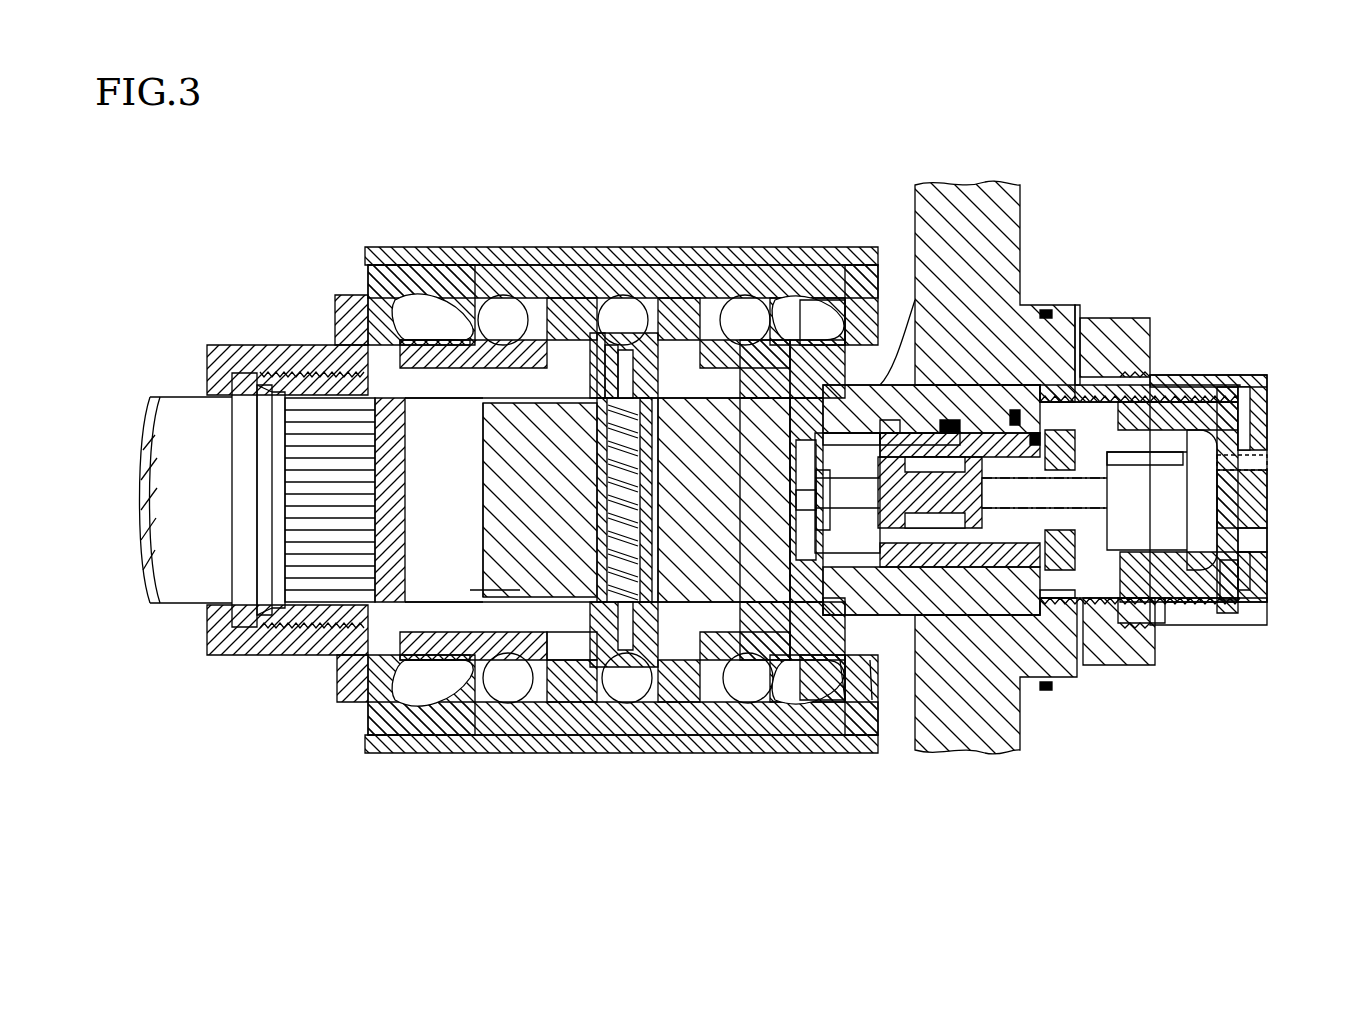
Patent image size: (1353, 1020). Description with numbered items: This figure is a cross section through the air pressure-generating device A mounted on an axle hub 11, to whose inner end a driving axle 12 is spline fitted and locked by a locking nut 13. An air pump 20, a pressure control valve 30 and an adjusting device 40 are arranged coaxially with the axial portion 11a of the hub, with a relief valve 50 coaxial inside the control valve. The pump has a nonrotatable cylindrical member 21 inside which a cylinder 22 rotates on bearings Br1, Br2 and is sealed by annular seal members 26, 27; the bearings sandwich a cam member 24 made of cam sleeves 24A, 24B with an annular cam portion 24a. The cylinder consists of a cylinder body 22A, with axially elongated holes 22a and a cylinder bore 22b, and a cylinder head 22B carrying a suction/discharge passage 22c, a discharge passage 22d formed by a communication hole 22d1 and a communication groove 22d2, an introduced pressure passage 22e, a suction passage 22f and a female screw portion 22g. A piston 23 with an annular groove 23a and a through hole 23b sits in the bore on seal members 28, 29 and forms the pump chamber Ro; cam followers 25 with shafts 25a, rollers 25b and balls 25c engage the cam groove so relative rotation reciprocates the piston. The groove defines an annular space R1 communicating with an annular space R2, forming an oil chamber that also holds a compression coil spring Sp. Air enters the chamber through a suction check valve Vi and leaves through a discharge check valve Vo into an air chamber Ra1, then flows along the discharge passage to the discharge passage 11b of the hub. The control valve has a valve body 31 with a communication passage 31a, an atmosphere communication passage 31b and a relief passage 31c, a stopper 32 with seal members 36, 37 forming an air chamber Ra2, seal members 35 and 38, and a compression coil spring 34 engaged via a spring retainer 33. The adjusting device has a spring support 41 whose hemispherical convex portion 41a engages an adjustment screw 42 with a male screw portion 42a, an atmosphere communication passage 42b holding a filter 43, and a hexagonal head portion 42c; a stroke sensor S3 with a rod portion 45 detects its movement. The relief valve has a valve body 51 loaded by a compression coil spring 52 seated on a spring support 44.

The axle hub 11 is at (1140, 348).
The axial portion 11a is at (300, 385).
The discharge passage 11b is at (1078, 318).
The driving axle 12 is at (165, 600).
The locking nut 13 is at (343, 295).
The air pump 20 is at (468, 700).
The cylindrical member 21 is at (803, 298).
The cylinder 22 is at (690, 620).
The axially elongated holes 22a is at (548, 340).
The cylinder body 22A is at (485, 700).
The cylinder bore 22b is at (790, 660).
The cylinder head 22B is at (755, 470).
The suction/discharge passage 22c is at (900, 378).
The discharge passage 22d is at (870, 640).
The communication hole 22d1 is at (830, 620).
The communication groove 22d2 is at (1048, 600).
The introduced pressure passage 22e is at (1042, 310).
The suction passage 22f is at (892, 420).
The female screw portion 22g is at (1200, 402).
The piston 23 is at (762, 340).
The annular groove 23a is at (415, 400).
The through hole 23b is at (520, 405).
The cam member 24 is at (620, 296).
The cam portion 24a is at (630, 703).
The cam sleeve 24A is at (655, 333).
The cam sleeve 24B is at (592, 333).
The cam followers 25 is at (662, 398).
The shafts 25a is at (500, 470).
The rollers 25b is at (662, 412).
The balls 25c is at (612, 345).
The annular seal member 26 is at (858, 262).
The annular seal member 27 is at (402, 262).
The annular seal member 28 is at (732, 755).
The annular seal member 29 is at (508, 703).
The pressure control valve 30 is at (950, 530).
The valve body 31 is at (795, 440).
The communication passage 31a is at (870, 432).
The atmosphere communication passage 31b is at (940, 432).
The relief passage 31c is at (796, 505).
The stopper 32 is at (1035, 432).
The spring retainer 33 is at (1135, 420).
The compression coil spring 34 is at (1205, 604).
The annular seal member 35 is at (958, 412).
The annular seal member 36 is at (1058, 430).
The annular seal member 37 is at (1015, 410).
The annular seal member 38 is at (800, 530).
The adjusting device 40 is at (1268, 560).
The spring support 41 is at (1268, 590).
The hemispherical convex portion 41a is at (1268, 500).
The adjustment screw 42 is at (1268, 420).
The male screw portion 42a is at (1252, 395).
The atmosphere communication passage 42b is at (1268, 462).
The hexagonal head portion 42c is at (1268, 535).
The filter 43 is at (1268, 450).
The spring support 44 is at (1150, 604).
The rod portion 45 is at (1108, 492).
The relief valve 50 is at (920, 568).
The valve body 51 is at (845, 555).
The compression coil spring 52 is at (1112, 465).
The air pressure-generating device A is at (1268, 372).
The bearing Br1 is at (745, 296).
The bearing Br2 is at (503, 296).
The annular space R1 is at (560, 700).
The annular space R2 is at (600, 700).
The pump chamber Ro is at (808, 330).
The air chamber Ra1 is at (830, 360).
The air chamber Ra2 is at (930, 600).
The stroke sensor S3 is at (1235, 602).
The compression coil spring Sp is at (470, 588).
The suction check valve Vi is at (872, 705).
The discharge check valve Vo is at (843, 705).